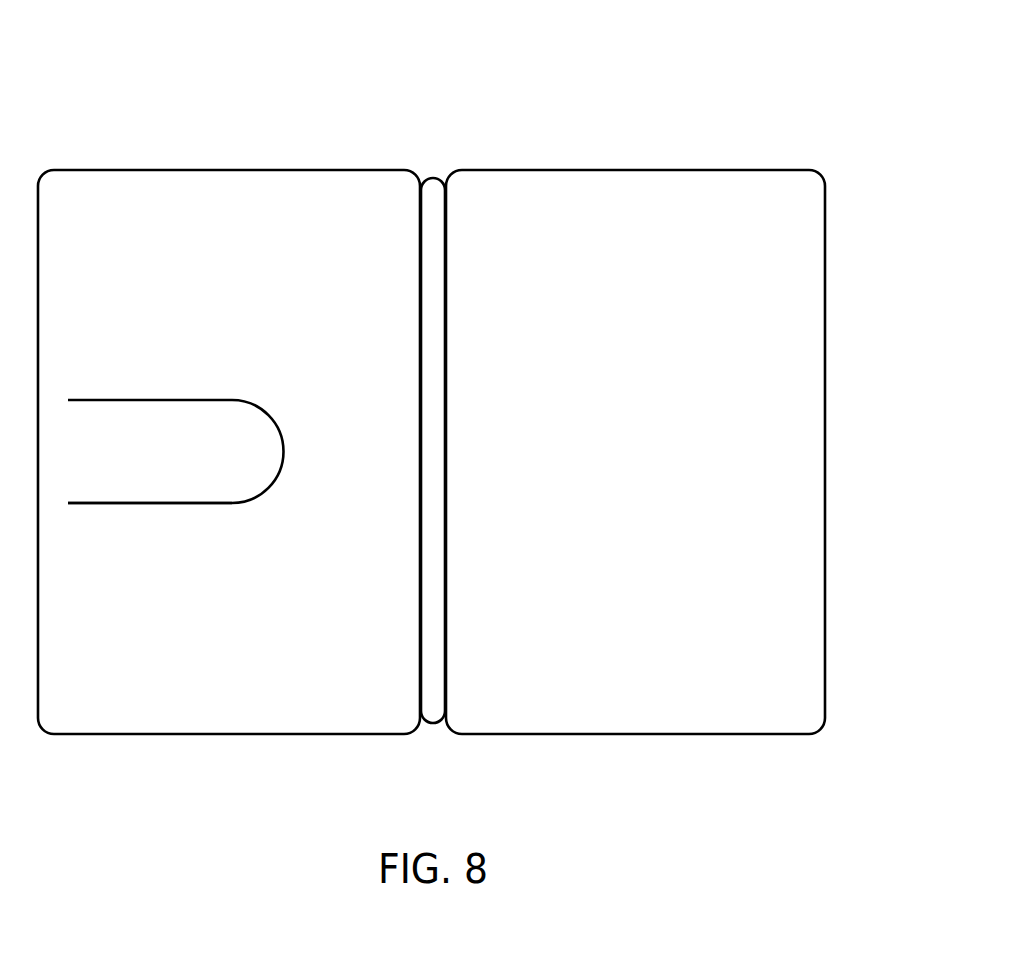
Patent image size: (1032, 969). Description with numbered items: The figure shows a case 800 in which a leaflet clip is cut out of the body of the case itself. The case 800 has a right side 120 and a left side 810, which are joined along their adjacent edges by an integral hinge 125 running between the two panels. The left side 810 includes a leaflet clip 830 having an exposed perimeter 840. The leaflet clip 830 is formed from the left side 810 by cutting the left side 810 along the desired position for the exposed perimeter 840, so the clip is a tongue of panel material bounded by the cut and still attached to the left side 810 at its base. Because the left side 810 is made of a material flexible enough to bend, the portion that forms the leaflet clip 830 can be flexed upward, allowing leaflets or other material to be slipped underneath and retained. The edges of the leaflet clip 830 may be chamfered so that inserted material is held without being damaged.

The case 800 is at (884, 72).
The left side 810 is at (258, 198).
The integral hinge 125 is at (433, 178).
The right side 120 is at (546, 192).
The leaflet clip 830 is at (108, 418).
The exposed perimeter 840 is at (180, 503).